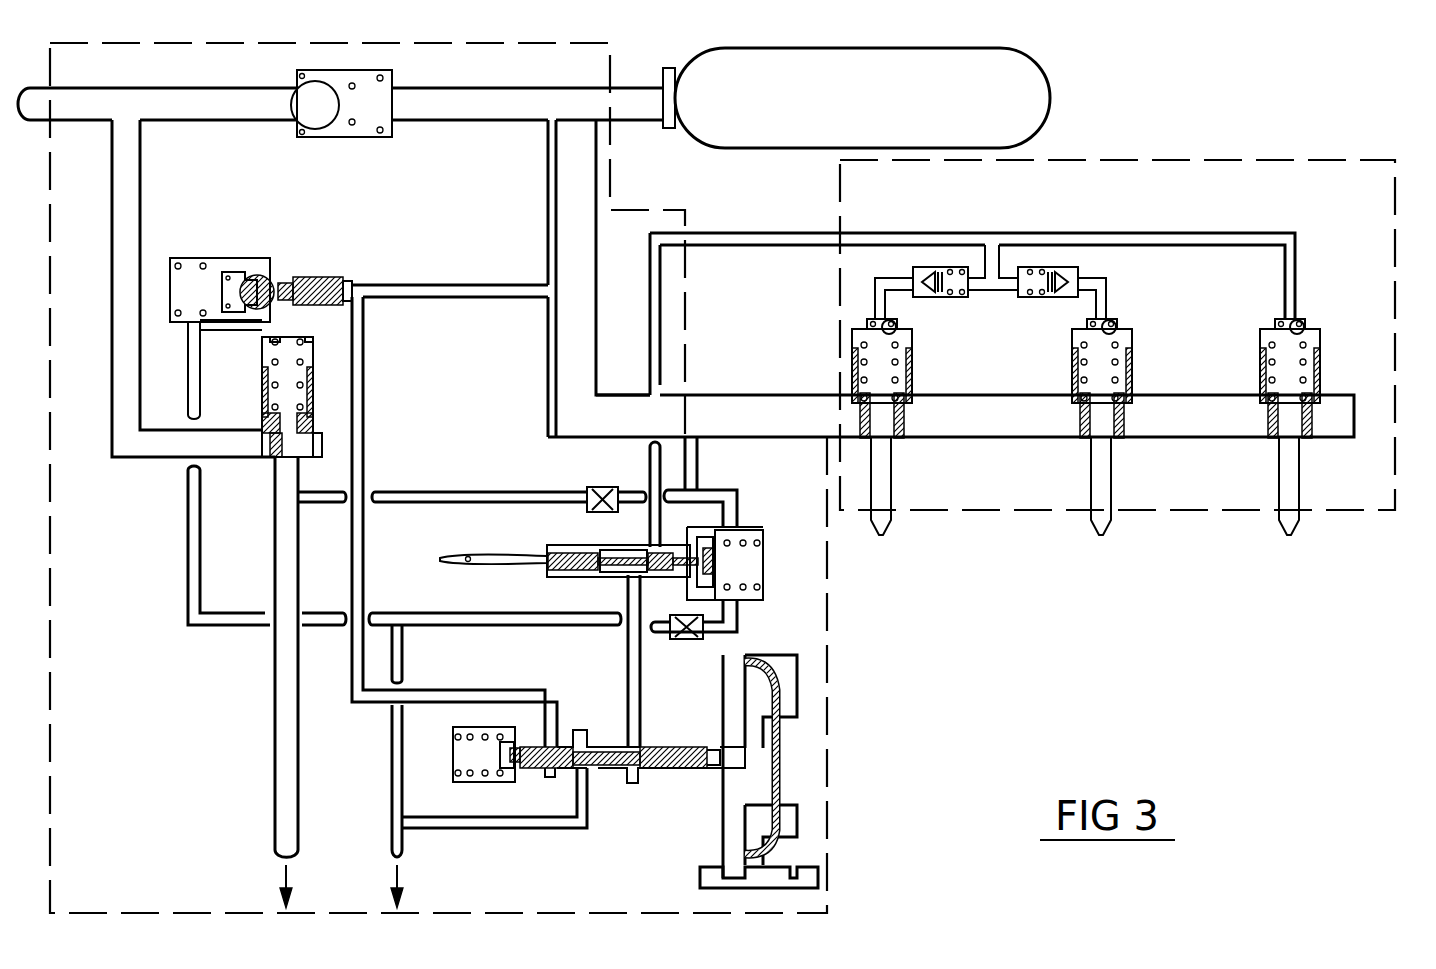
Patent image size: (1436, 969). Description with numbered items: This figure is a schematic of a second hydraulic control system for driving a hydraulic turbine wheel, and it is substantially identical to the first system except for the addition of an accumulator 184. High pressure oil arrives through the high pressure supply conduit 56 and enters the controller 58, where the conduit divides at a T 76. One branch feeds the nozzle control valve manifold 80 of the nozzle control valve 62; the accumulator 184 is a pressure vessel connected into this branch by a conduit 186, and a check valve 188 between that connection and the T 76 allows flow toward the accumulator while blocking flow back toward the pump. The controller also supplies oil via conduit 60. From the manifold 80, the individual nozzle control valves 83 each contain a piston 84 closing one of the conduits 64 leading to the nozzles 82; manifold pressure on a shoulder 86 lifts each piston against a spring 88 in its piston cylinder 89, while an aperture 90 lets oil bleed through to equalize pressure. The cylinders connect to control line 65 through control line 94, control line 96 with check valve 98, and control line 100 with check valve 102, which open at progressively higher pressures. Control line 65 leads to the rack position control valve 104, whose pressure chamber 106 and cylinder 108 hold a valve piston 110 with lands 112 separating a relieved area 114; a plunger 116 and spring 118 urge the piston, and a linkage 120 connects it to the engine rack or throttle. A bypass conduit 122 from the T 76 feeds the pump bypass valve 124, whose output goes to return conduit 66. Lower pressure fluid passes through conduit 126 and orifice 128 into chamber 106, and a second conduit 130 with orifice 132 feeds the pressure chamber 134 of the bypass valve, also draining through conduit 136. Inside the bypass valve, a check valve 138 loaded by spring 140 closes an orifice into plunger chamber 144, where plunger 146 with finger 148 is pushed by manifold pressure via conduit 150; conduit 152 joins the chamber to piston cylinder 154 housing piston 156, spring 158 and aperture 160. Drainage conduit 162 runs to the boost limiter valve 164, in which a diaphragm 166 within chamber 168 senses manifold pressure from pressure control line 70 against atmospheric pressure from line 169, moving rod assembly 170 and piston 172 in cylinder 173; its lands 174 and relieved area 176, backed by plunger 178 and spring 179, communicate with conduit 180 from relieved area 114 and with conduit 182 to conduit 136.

The high pressure supply conduit 56 is at (100, 100).
The controller 58 is at (612, 62).
The conduit 60 is at (768, 437).
The nozzle control valve 62 is at (1205, 160).
The conduits 64 is at (893, 475).
The control line 65 is at (722, 233).
The return conduit 66 is at (274, 800).
The pressure control line 70 is at (820, 873).
The T 76 is at (145, 122).
The nozzle control valve manifold 80 is at (1355, 430).
The hydraulic turbine wheel nozzles 82 is at (883, 530).
The individual nozzle control valve 83 is at (912, 375).
The piston 84 is at (852, 405).
The shoulder 86 is at (906, 408).
The spring 88 is at (912, 342).
The piston cylinder 89 is at (898, 322).
The aperture 90 is at (860, 425).
The control line 94 is at (1240, 233).
The control line 96 is at (1112, 290).
The check valve 98 is at (1050, 268).
The control line 100 is at (870, 298).
The check valve 102 is at (918, 270).
The rack position control valve 104 is at (768, 548).
The pressure chamber 106 is at (760, 528).
The cylinder 108 is at (622, 553).
The valve piston 110 is at (568, 545).
The lands 112 is at (665, 553).
The relieved area 114 is at (615, 578).
The plunger 116 is at (765, 575).
The spring 118 is at (765, 598).
The linkage 120 is at (500, 563).
The bypass conduit 122 is at (112, 225).
The pump bypass valve 124 is at (318, 352).
The conduit 126 is at (455, 492).
The orifice 128 is at (602, 487).
The second conduit 130 is at (187, 570).
The orifice 132 is at (695, 640).
The pressure chamber 134 is at (193, 258).
The conduit 136 is at (391, 790).
The check valve 138 is at (265, 280).
The spring 140 is at (195, 312).
The plunger chamber 144 is at (290, 283).
The plunger 146 is at (350, 280).
The finger 148 is at (345, 305).
The conduit 150 is at (488, 298).
The conduit 152 is at (262, 328).
The piston cylinder 154 is at (262, 362).
The piston 156 is at (314, 405).
The spring 158 is at (314, 385).
The aperture 160 is at (268, 442).
The drainage conduit 162 is at (364, 460).
The boost limiter valve 164 is at (800, 668).
The diaphragm 166 is at (790, 805).
The chamber 168 is at (798, 830).
The line 169 is at (702, 880).
The rod assembly 170 is at (722, 745).
The piston 172 is at (675, 768).
The cylinder 173 is at (612, 748).
The lands 174 is at (538, 770).
The relieved area 176 is at (602, 770).
The plunger 178 is at (510, 740).
The spring 179 is at (470, 775).
The conduit 180 is at (627, 648).
The conduit 182 is at (547, 828).
The accumulator 184 is at (1060, 92).
The conduit 186 is at (618, 110).
The check valve 188 is at (340, 137).